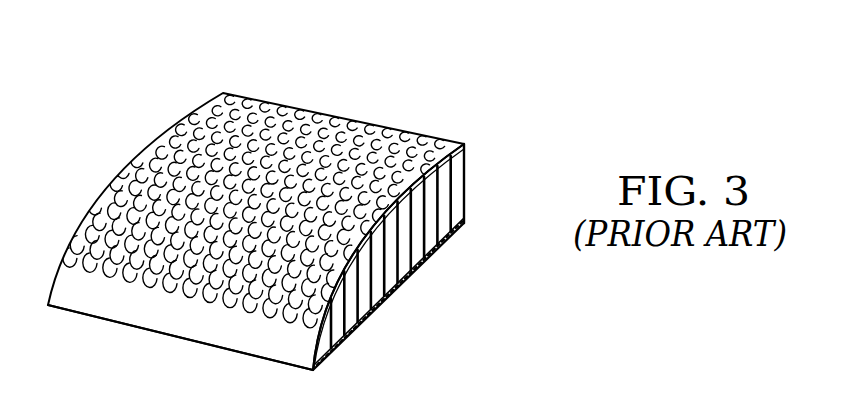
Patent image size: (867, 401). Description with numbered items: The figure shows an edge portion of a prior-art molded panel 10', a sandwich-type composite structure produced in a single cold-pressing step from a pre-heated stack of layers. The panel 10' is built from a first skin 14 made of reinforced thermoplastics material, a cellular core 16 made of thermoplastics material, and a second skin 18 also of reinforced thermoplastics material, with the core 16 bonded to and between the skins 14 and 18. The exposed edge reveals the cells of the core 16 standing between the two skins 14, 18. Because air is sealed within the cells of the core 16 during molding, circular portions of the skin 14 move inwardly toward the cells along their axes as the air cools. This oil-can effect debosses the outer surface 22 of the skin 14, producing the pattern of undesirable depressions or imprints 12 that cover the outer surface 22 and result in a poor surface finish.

The panel 10' is at (328, 185).
The depressions 12 is at (360, 147).
The first skin 14 is at (465, 147).
The cellular core 16 is at (460, 190).
The second skin 18 is at (465, 220).
The outer surface 22 is at (173, 317).